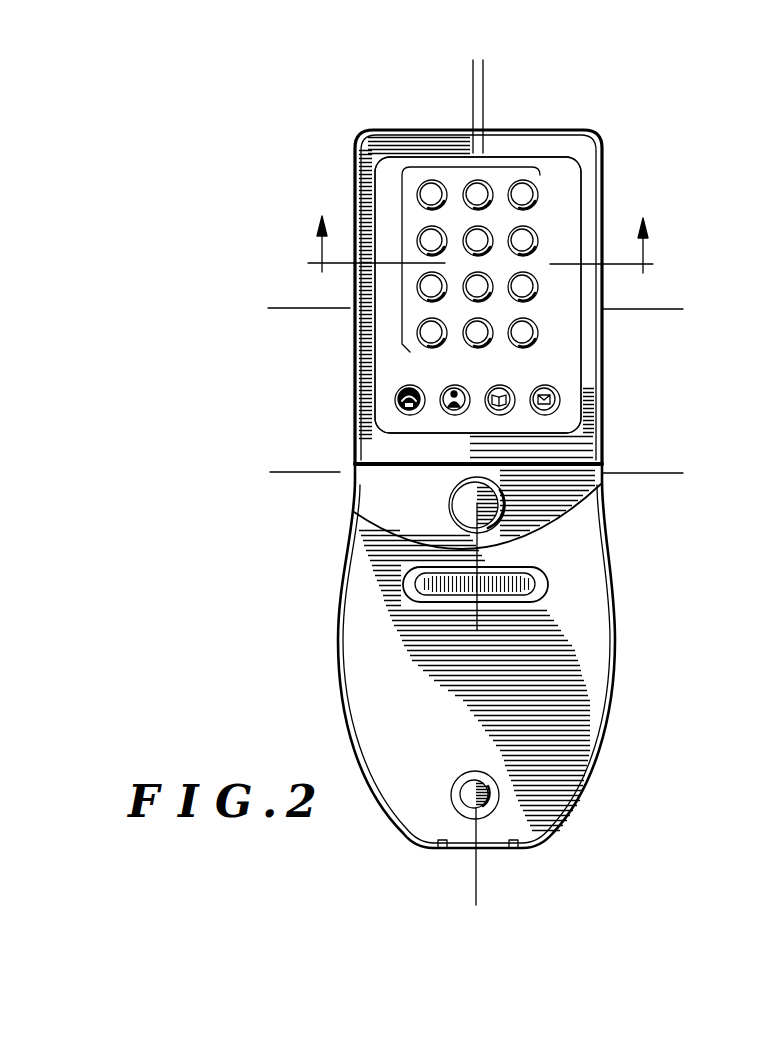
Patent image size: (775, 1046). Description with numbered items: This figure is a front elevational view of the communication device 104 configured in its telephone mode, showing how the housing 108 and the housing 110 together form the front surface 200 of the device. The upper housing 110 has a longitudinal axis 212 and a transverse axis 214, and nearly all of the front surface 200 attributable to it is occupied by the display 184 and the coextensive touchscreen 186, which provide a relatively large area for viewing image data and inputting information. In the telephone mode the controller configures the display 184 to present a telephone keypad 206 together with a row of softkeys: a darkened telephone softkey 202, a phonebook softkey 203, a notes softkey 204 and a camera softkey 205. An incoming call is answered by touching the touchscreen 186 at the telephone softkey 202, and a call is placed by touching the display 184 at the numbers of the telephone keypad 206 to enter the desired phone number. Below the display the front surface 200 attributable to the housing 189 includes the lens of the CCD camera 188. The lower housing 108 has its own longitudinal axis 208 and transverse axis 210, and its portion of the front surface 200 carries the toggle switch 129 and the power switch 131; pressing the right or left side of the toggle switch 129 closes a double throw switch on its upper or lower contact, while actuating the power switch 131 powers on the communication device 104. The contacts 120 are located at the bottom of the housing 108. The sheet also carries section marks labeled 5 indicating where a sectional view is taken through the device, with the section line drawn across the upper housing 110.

The communication device 104 is at (627, 177).
The housing 110 is at (585, 143).
The housing 108 is at (608, 633).
The contacts 120 is at (444, 852).
The toggle switch 129 is at (520, 583).
The power switch 131 is at (468, 793).
The display 184 is at (565, 352).
The touchscreen 186 is at (478, 295).
The CCD camera 188 is at (498, 502).
The housing 189 is at (374, 497).
The front surface 200 is at (360, 697).
The telephone softkey 202 is at (395, 403).
The phonebook softkey 203 is at (507, 410).
The notes softkey 204 is at (556, 393).
The camera softkey 205 is at (452, 390).
The telephone keypad 206 is at (498, 168).
The longitudinal axis 208 is at (483, 86).
The transverse axis 210 is at (290, 472).
The longitudinal axis 212 is at (473, 86).
The transverse axis 214 is at (290, 308).
The section line 5- 5 is at (481, 244).